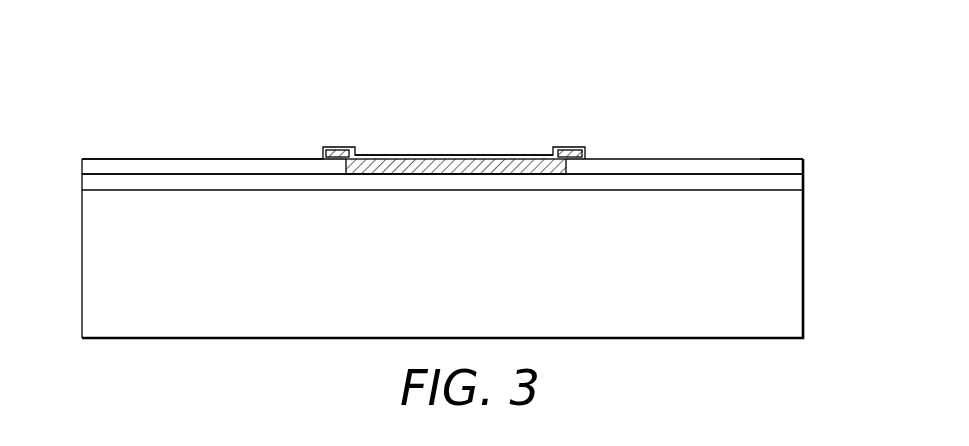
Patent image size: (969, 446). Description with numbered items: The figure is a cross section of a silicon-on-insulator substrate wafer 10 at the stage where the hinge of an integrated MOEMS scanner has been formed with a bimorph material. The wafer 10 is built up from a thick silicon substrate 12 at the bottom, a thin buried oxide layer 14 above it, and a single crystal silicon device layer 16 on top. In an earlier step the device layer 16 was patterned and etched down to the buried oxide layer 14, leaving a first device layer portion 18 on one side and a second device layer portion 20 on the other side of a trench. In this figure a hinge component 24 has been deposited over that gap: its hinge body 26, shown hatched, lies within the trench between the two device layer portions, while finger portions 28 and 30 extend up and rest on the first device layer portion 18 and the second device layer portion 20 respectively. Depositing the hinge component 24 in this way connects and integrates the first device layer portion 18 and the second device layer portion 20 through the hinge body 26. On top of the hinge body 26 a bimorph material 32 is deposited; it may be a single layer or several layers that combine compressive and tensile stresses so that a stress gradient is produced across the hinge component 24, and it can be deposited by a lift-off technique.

The silicon-on-insulator substrate wafer 10 is at (460, 200).
The silicon substrate 12 is at (805, 245).
The buried oxide layer 14 is at (805, 183).
The single crystal silicon device layer 16 is at (805, 168).
The first device layer portion 18 is at (789, 160).
The second device layer portion 20 is at (169, 158).
The hinge component 24 is at (448, 131).
The hinge body 26 is at (352, 160).
The finger portion 28 is at (585, 153).
The finger portion 30 is at (323, 152).
The bimorph material 32 is at (347, 147).